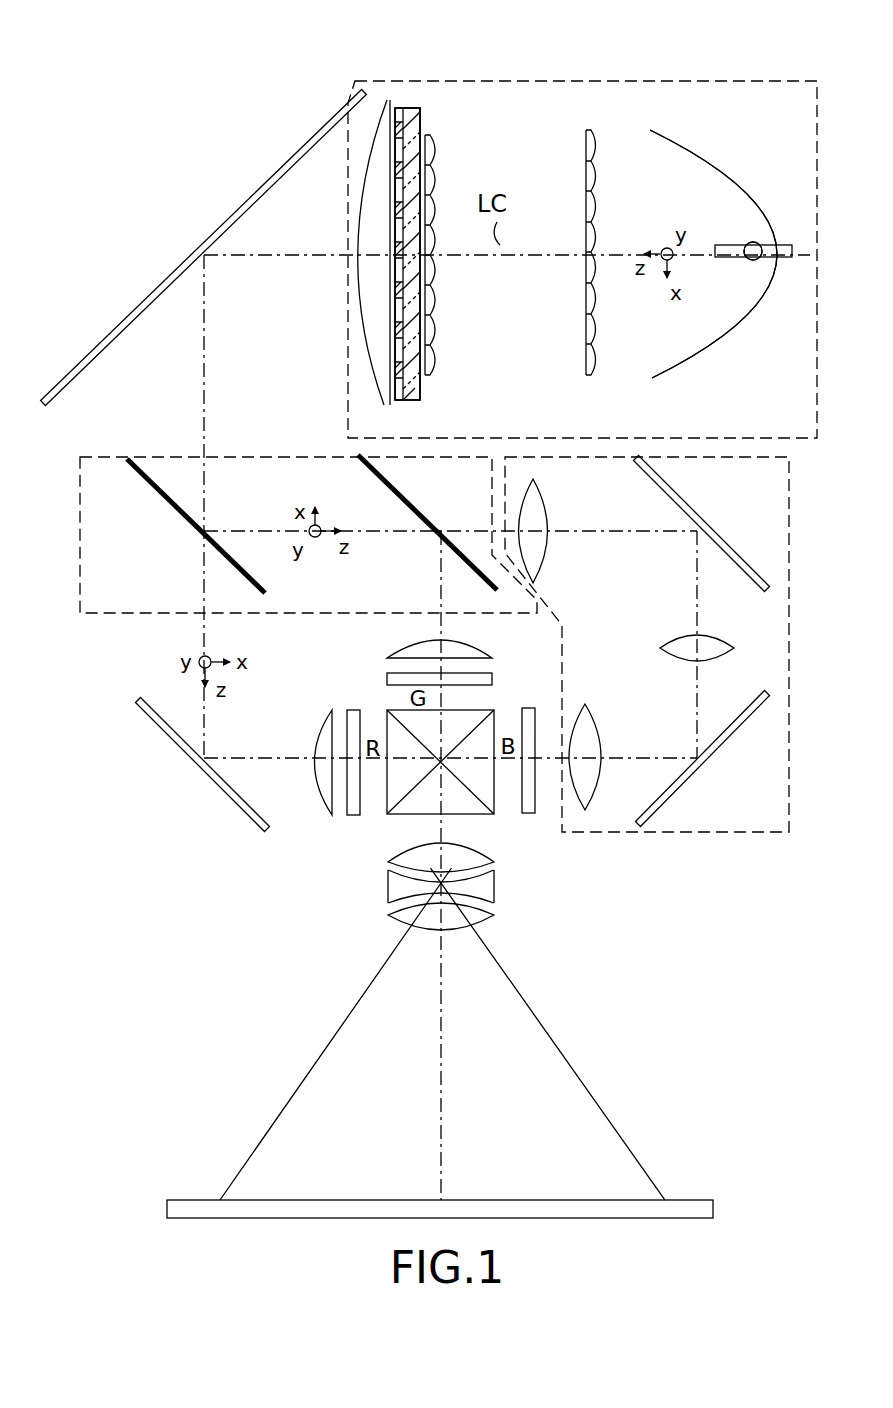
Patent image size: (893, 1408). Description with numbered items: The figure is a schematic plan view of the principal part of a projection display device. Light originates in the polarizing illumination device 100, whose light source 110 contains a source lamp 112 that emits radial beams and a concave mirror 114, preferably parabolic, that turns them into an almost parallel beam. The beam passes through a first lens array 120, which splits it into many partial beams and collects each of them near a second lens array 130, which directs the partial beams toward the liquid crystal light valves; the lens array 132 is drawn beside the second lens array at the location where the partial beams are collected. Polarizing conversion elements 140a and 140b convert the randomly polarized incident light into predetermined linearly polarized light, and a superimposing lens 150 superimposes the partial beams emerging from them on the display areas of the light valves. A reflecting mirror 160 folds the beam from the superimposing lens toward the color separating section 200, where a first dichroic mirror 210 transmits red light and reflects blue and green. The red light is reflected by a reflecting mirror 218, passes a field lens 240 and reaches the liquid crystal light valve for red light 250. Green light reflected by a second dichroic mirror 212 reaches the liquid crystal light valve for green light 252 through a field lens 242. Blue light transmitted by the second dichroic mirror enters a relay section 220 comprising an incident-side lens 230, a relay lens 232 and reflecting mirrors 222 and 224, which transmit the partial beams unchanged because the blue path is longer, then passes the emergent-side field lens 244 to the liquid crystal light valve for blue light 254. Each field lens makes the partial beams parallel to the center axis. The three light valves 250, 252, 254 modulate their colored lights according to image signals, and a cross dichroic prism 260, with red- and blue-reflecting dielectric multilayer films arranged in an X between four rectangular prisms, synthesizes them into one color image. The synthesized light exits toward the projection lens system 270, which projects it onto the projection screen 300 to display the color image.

The polarizing illumination device 100 is at (602, 81).
The light source 110 is at (733, 148).
The source lamp 112 is at (756, 260).
The concave mirror 114 is at (710, 355).
The first lens array 120 is at (594, 386).
The second lens array 130 is at (437, 384).
The second lens array 132 is at (437, 330).
The polarizing conversion element 140a is at (428, 113).
The polarizing conversion element 140b is at (413, 408).
The superimposing lens 150 is at (384, 404).
The reflecting mirror 160 is at (113, 331).
The color separating unit 200 is at (138, 613).
The first dichroic mirror 210 is at (153, 491).
The second dichroic mirror 212 is at (373, 472).
The reflecting mirror 218 is at (150, 718).
The relay optical unit 220 is at (697, 833).
The reflecting mirror 222 is at (681, 498).
The reflecting mirror 224 is at (730, 737).
The incident-side lens 230 is at (548, 489).
The relay lens 232 is at (703, 639).
The field lens 240 is at (323, 708).
The field lens 242 is at (393, 652).
The field lens 244 is at (597, 717).
The liquid crystal light valve for red light 250 is at (353, 712).
The liquid crystal light valve for green light 252 is at (493, 677).
The liquid crystal light valve for blue light 254 is at (528, 814).
The cross dichroic prism 260 is at (388, 810).
The projection lens system 270 is at (372, 853).
The projection screen 300 is at (186, 1200).